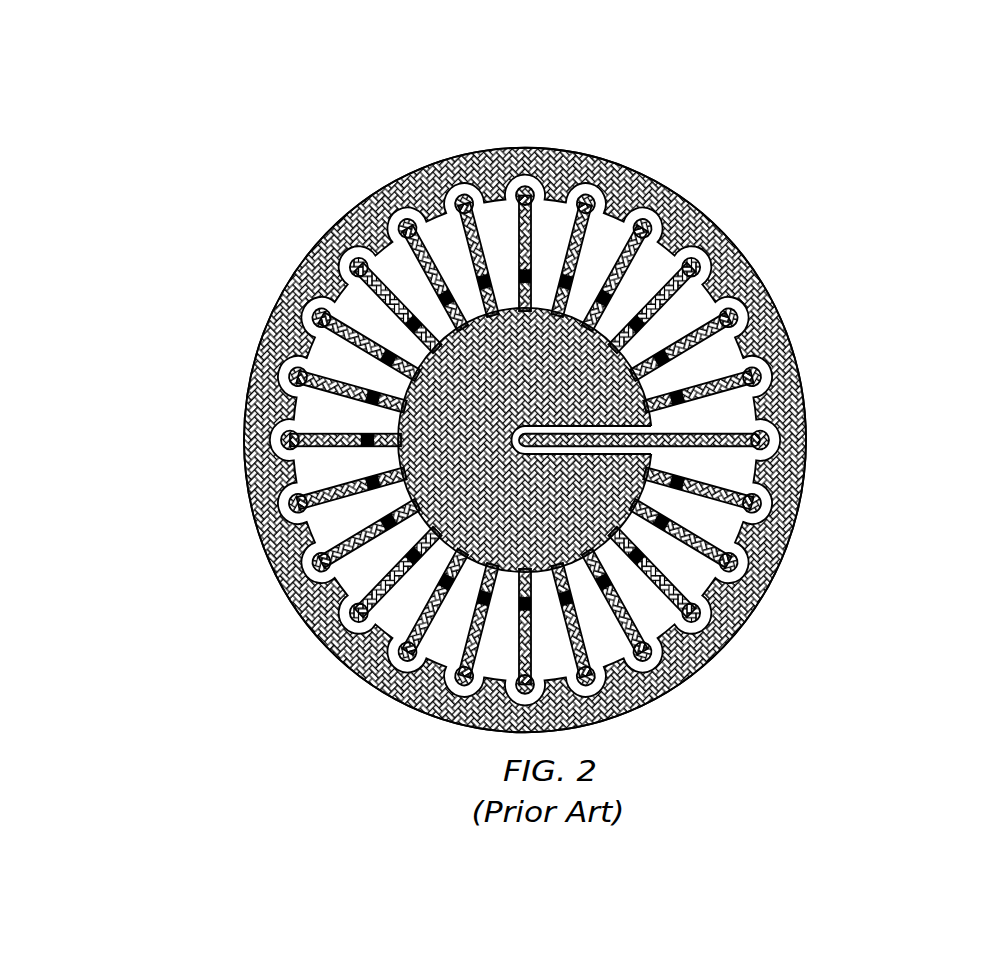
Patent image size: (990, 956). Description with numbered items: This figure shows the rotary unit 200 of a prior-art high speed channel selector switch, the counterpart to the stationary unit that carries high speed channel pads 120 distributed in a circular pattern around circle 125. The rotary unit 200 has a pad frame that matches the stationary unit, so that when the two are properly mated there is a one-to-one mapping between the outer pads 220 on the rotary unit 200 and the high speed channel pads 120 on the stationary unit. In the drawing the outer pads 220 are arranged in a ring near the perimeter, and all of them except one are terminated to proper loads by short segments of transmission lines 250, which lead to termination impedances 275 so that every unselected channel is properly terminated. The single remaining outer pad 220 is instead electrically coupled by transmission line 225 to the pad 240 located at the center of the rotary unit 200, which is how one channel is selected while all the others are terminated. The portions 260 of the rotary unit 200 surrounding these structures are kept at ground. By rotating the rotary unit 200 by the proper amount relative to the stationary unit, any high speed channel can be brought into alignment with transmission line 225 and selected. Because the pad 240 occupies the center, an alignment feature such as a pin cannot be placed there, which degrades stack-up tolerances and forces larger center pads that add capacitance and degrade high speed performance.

The rotary unit 200 is at (557, 399).
The outer pads 220 is at (552, 399).
The high speed channel pads 120 is at (552, 399).
The circle 125 is at (733, 241).
The transmission line 225 is at (739, 414).
The portions 260 is at (802, 497).
The transmission lines 250 is at (527, 440).
The termination impedances 275 is at (412, 327).
The pad 240 is at (403, 468).